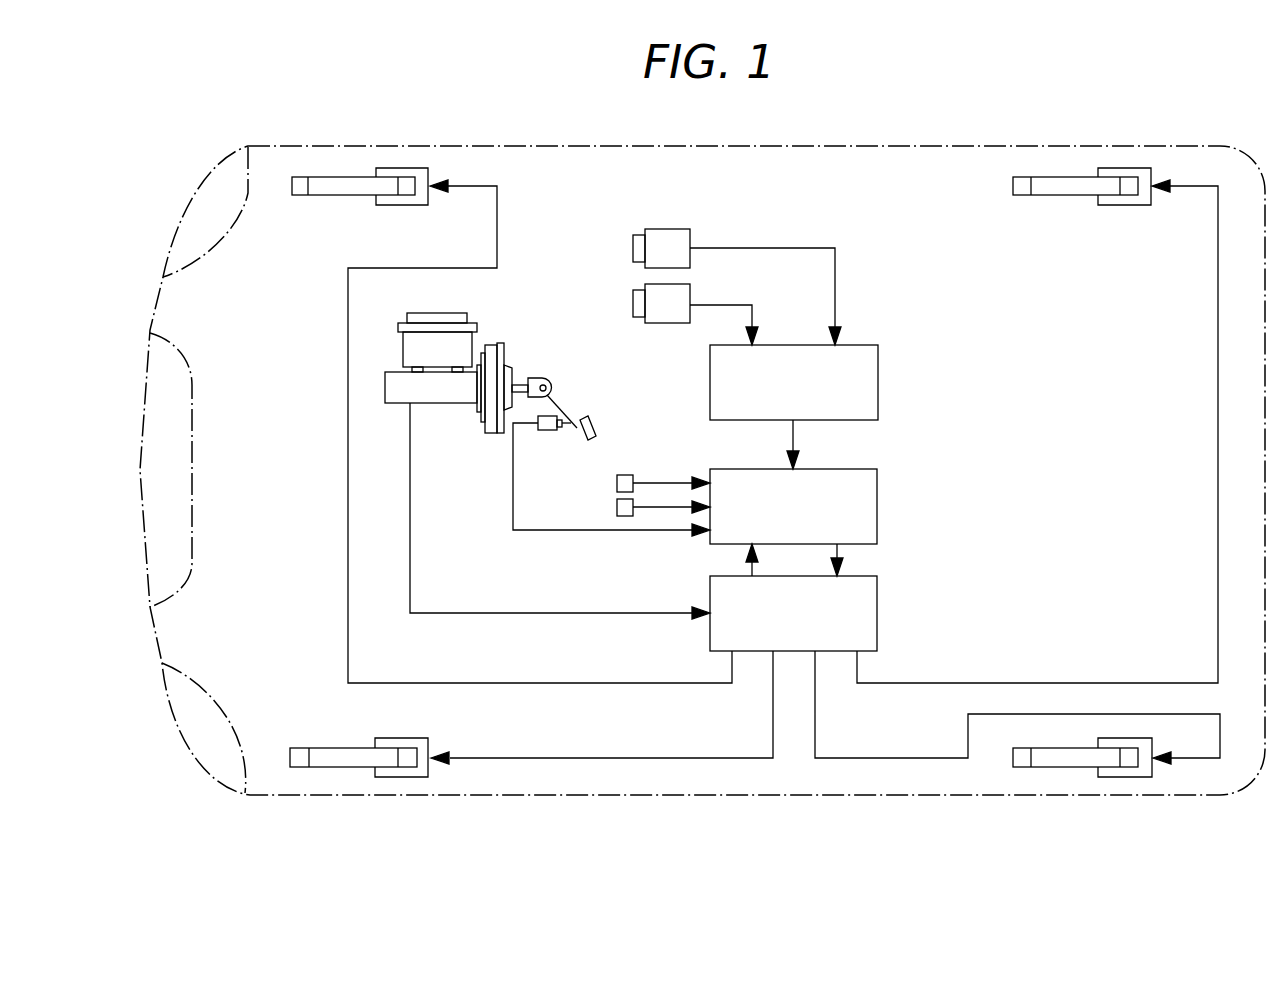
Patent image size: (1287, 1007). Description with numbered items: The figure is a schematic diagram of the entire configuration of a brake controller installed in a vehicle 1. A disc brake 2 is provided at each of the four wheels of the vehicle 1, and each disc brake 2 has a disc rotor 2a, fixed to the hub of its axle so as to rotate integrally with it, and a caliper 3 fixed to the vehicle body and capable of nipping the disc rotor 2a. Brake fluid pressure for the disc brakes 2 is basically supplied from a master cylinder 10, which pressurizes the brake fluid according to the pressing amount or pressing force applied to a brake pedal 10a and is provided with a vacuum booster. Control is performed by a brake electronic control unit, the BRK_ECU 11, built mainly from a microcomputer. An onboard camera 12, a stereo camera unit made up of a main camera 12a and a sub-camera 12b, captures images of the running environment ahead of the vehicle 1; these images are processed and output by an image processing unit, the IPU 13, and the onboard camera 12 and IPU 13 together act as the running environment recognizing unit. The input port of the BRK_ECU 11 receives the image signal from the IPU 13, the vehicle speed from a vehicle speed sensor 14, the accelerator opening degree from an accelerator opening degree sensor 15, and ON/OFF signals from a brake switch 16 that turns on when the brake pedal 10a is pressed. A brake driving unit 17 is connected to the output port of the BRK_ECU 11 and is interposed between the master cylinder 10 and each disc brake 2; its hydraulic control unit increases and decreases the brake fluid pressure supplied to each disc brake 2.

The vehicle 1 is at (925, 131).
The disc brake 2 is at (721, 475).
The disc rotor 2a is at (335, 196).
The caliper 3 is at (405, 206).
The master cylinder 10 is at (511, 358).
The brake pedal 10a is at (594, 429).
The brake electronic control unit (BRK_ECU) 11 is at (878, 503).
The onboard camera 12 is at (664, 264).
The main camera 12a is at (682, 240).
The sub-camera 12b is at (682, 295).
The image processing unit (IPU) 13 is at (878, 382).
The vehicle speed sensor 14 is at (617, 484).
The accelerator opening degree sensor 15 is at (617, 508).
The brake switch 16 is at (548, 432).
The brake driving unit 17 is at (878, 611).